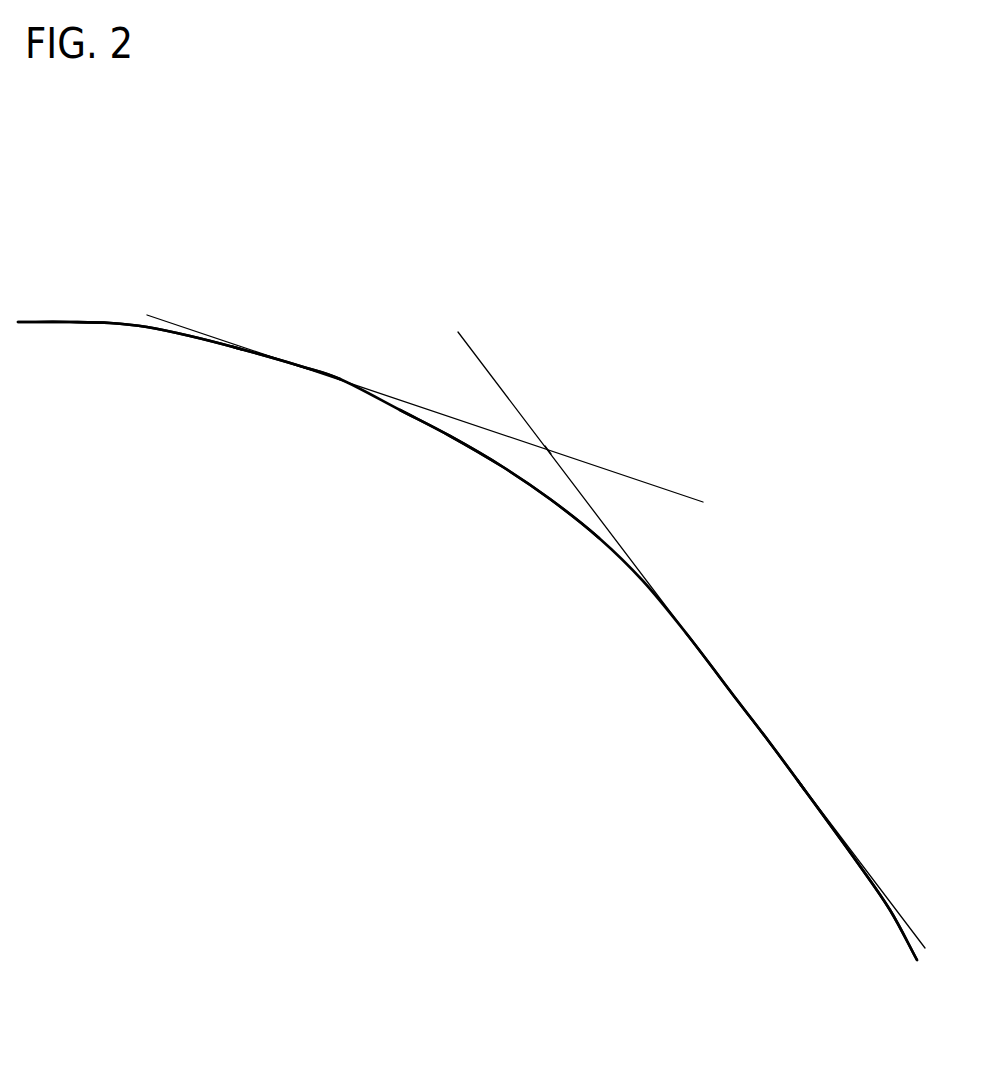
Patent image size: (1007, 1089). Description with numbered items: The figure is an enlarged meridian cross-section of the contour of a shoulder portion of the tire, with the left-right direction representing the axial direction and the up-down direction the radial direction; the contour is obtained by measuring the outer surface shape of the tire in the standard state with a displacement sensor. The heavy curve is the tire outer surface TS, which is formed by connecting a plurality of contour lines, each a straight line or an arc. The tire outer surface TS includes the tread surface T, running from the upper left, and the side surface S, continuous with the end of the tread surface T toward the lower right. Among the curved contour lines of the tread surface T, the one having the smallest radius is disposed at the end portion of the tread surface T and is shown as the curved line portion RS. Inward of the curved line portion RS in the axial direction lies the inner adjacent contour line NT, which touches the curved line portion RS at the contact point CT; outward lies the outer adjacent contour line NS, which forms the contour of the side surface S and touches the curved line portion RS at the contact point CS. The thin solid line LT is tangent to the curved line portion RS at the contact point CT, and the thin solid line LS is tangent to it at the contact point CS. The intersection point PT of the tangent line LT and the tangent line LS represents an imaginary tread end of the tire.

The tread surface T is at (111, 322).
The tire outer surface TS is at (43, 322).
The contact point CT is at (302, 365).
The inner adjacent contour line NT is at (237, 349).
The tangent line LT is at (677, 490).
The tangent line LS is at (477, 355).
The intersection point PT is at (548, 450).
The curved line portion RS is at (503, 468).
The contact point CS is at (757, 722).
The outer adjacent contour line NS is at (800, 785).
The side surface S is at (893, 920).